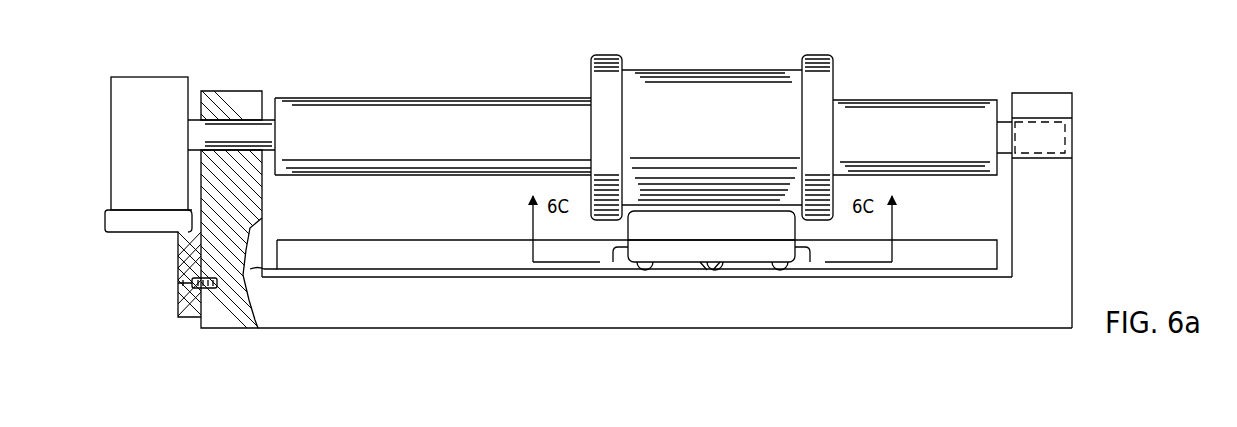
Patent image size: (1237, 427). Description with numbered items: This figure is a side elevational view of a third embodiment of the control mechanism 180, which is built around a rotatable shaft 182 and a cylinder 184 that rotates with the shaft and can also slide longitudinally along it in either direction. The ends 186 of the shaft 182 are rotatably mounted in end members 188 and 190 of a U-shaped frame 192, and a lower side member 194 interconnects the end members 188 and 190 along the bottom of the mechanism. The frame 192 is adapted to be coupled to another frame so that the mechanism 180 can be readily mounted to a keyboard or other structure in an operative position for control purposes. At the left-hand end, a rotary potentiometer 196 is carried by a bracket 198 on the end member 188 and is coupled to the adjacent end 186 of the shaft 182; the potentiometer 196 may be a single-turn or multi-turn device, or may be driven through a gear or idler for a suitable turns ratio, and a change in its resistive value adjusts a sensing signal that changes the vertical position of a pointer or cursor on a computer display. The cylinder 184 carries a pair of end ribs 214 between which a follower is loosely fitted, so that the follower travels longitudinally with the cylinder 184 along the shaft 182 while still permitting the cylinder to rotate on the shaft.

The control mechanism 180 is at (522, 75).
The rotatable shaft 182 is at (910, 100).
The cylinder 184 is at (730, 70).
The ends of the shaft 186 is at (218, 128).
The end member 188 is at (263, 205).
The end member 190 is at (1073, 197).
The frame 192 is at (881, 336).
The lower side member 194 is at (694, 333).
The rotary potentiometer 196 is at (148, 77).
The bracket 198 is at (150, 233).
The end ribs 214 is at (608, 55).